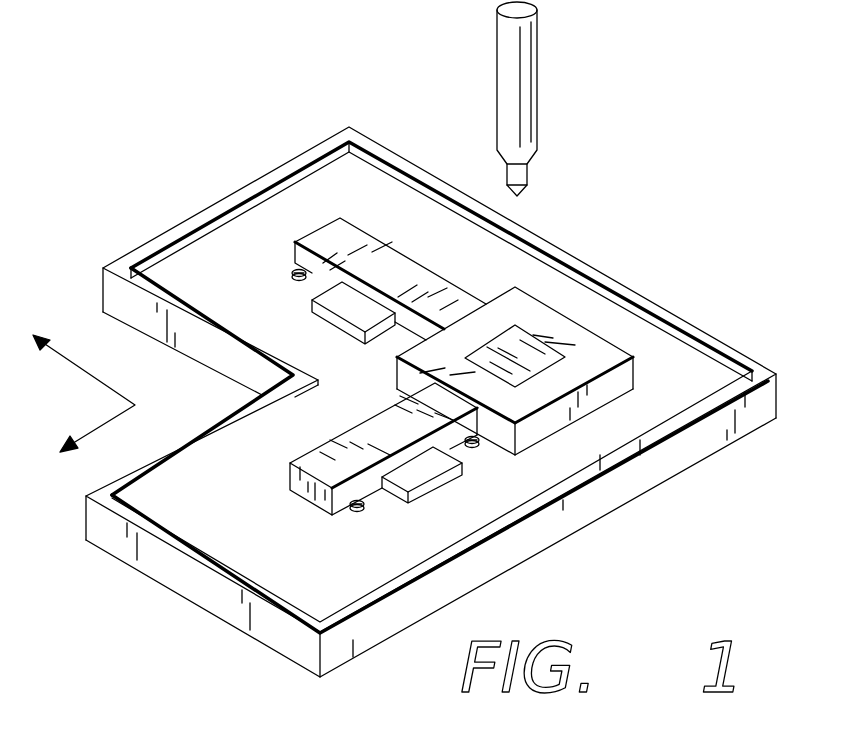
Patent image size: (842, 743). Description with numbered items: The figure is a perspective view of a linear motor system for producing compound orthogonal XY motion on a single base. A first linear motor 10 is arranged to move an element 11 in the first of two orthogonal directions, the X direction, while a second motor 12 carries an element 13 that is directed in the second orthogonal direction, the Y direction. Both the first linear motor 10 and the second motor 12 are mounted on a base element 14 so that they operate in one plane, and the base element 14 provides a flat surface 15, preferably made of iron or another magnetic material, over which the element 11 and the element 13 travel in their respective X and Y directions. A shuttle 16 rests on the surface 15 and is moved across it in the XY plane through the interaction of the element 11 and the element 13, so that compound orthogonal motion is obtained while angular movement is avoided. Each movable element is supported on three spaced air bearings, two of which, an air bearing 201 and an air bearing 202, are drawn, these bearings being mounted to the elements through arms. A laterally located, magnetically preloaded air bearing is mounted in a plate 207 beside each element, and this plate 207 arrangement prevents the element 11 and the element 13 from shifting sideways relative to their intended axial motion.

The first linear motor 10 is at (299, 500).
The element 11 is at (401, 392).
The second motor 12 is at (383, 224).
The element 13 is at (456, 303).
The base element 14 is at (608, 258).
The flat surface 15 is at (208, 509).
The shuttle 16 is at (636, 381).
The air bearing 201 is at (290, 276).
The air bearing 202 is at (473, 452).
The plate 207 is at (320, 312).